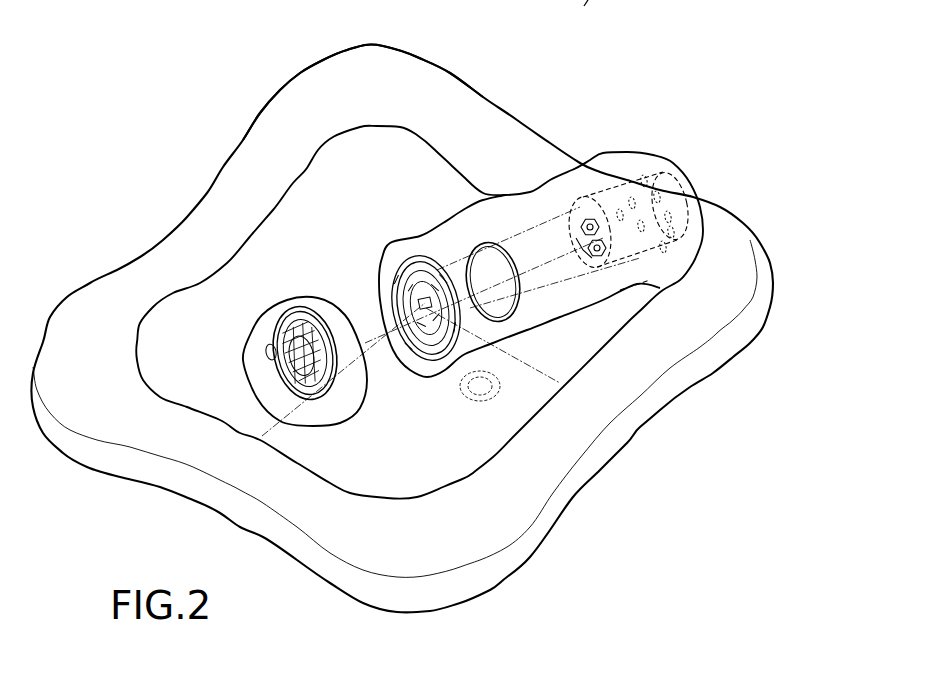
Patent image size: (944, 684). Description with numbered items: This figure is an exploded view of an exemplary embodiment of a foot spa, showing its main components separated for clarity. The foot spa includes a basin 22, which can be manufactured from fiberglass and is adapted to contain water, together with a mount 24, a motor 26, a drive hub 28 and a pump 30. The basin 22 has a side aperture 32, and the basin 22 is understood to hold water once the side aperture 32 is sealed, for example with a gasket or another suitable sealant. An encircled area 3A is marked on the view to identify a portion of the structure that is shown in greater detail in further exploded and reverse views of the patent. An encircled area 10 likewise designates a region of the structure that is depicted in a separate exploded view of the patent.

The foam insert 10 is at (619, 152).
The basin 22 is at (242, 175).
The mount 24 is at (408, 247).
The motor 26 is at (666, 270).
The drive hub 28 is at (563, 198).
The pump 30 is at (321, 420).
The side aperture 32 is at (498, 280).
The encircled area 3A is at (360, 418).